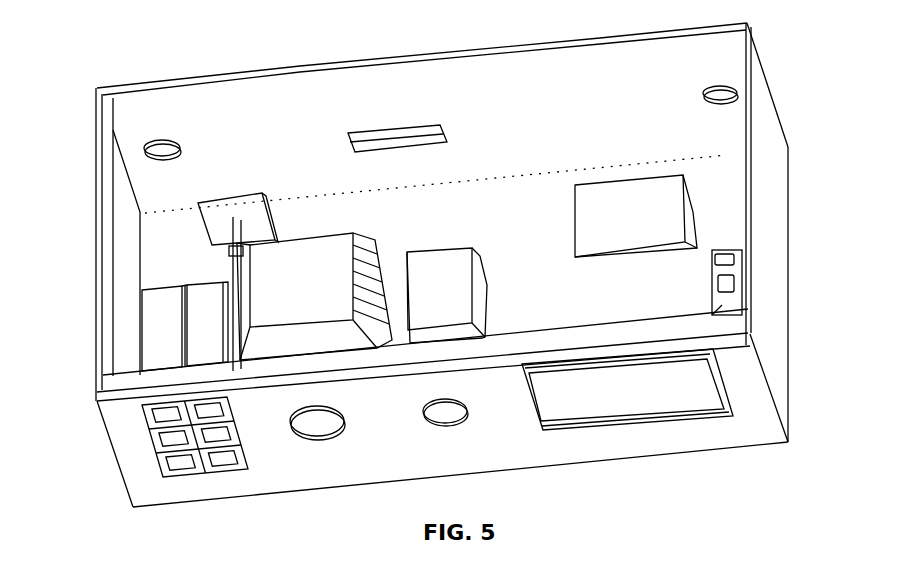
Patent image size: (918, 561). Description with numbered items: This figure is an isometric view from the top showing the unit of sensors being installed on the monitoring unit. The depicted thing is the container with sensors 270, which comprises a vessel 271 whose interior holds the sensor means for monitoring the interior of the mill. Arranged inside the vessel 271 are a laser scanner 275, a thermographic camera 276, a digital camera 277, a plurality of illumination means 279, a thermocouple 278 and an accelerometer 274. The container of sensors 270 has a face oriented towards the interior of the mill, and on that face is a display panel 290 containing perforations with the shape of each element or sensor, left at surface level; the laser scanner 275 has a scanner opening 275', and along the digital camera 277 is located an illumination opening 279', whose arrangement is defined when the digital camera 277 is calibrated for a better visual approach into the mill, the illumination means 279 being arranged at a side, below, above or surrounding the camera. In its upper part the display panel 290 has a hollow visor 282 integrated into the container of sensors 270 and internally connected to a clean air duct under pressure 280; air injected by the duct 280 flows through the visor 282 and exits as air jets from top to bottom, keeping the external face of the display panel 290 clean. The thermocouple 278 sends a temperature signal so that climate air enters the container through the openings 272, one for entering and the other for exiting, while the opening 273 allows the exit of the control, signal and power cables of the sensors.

The container with sensors 270 is at (478, 37).
The vessel 271 is at (538, 101).
The openings 272 is at (177, 148).
The opening 273 is at (382, 148).
The accelerometer 274 is at (607, 245).
The laser scanner 275 is at (710, 257).
The scanner opening 275' is at (627, 389).
The thermographic camera 276 is at (420, 276).
The digital camera 277 is at (312, 275).
The thermocouple 278 is at (254, 228).
The illumination means 279 is at (185, 307).
The illumination opening 279' is at (236, 444).
The clean air duct under pressure 280 is at (103, 146).
The visor 282 is at (97, 398).
The display panel 290 is at (518, 450).